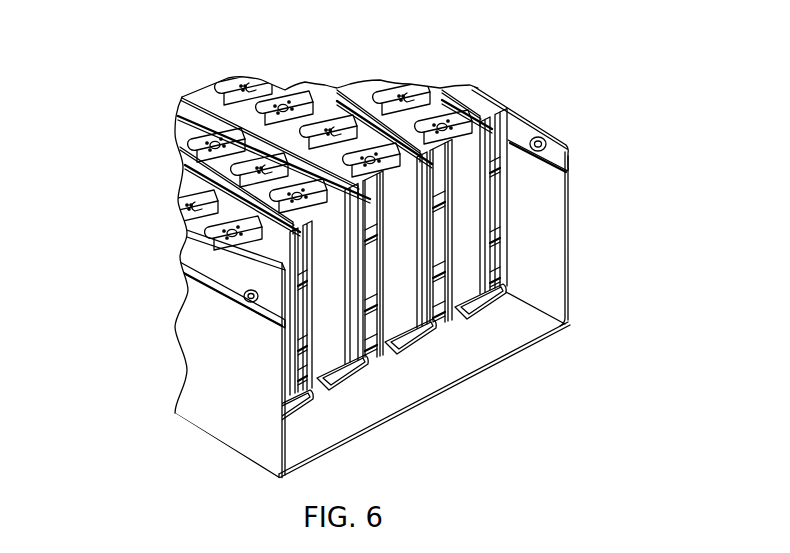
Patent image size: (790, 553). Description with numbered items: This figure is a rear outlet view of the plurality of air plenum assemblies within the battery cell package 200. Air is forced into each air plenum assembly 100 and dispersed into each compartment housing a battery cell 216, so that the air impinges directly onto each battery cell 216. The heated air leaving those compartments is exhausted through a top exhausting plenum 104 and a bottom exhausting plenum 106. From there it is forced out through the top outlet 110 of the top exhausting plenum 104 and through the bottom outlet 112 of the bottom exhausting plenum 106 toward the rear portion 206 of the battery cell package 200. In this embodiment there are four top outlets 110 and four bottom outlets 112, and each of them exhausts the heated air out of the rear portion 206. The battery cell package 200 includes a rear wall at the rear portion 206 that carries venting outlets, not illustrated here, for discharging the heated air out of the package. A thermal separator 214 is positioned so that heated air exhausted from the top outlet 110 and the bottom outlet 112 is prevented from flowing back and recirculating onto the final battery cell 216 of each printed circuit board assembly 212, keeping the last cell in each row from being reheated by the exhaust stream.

The battery cell package 200 is at (144, 78).
The air plenum assembly 100 is at (404, 130).
The battery cell 216 is at (444, 126).
The top exhausting plenum 104 is at (450, 160).
The printed circuit board assembly 212 is at (440, 152).
The top outlet 110 is at (438, 185).
The thermal separator 214 is at (480, 226).
The bottom outlet 112 is at (442, 292).
The bottom exhausting plenum 106 is at (455, 320).
The rear portion 206 is at (444, 391).